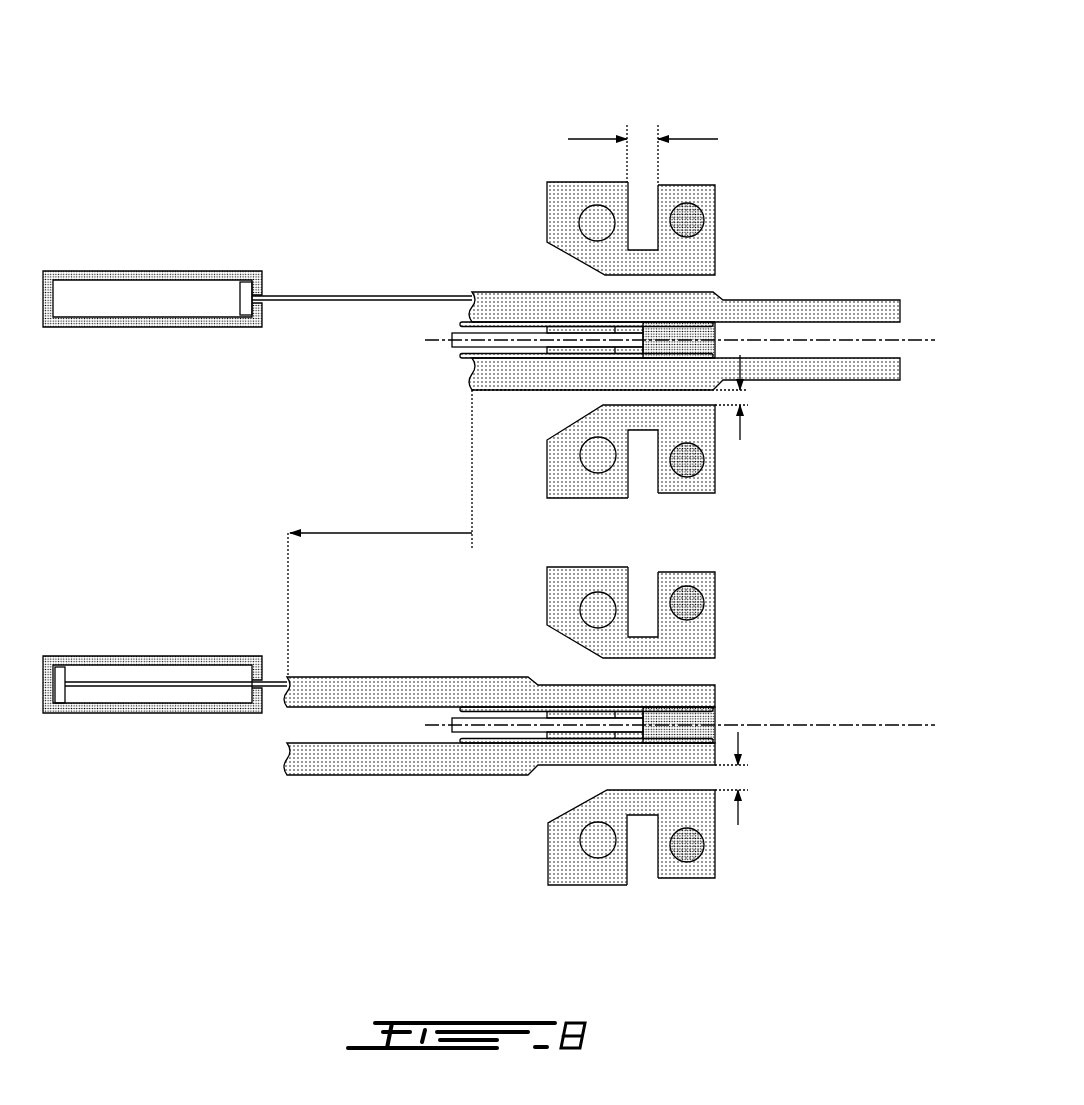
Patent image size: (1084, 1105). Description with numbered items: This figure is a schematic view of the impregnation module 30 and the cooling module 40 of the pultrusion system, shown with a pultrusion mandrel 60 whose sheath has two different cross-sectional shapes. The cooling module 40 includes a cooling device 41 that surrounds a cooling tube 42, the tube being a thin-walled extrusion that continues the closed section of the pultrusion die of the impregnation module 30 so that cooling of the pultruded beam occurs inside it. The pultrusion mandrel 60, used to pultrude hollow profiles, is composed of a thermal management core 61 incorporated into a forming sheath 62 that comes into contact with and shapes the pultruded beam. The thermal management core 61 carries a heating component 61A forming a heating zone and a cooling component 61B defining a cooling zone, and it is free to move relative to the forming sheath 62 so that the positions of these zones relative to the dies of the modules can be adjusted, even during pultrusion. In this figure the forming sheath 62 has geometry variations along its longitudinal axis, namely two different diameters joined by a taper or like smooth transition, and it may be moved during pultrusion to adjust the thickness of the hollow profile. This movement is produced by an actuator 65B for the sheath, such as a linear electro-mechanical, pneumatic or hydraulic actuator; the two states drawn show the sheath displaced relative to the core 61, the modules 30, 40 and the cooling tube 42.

The impregnation module 30 is at (563, 162).
The cooling module 40 is at (725, 491).
The cooling device 41 is at (705, 603).
The cooling tube 42 is at (715, 266).
The pultrusion mandrel 60 is at (625, 522).
The thermal management core 61 is at (612, 536).
The heating component 61A is at (547, 323).
The cooling component 61B is at (715, 332).
The forming sheath 62 is at (870, 370).
The actuator 65B is at (155, 270).